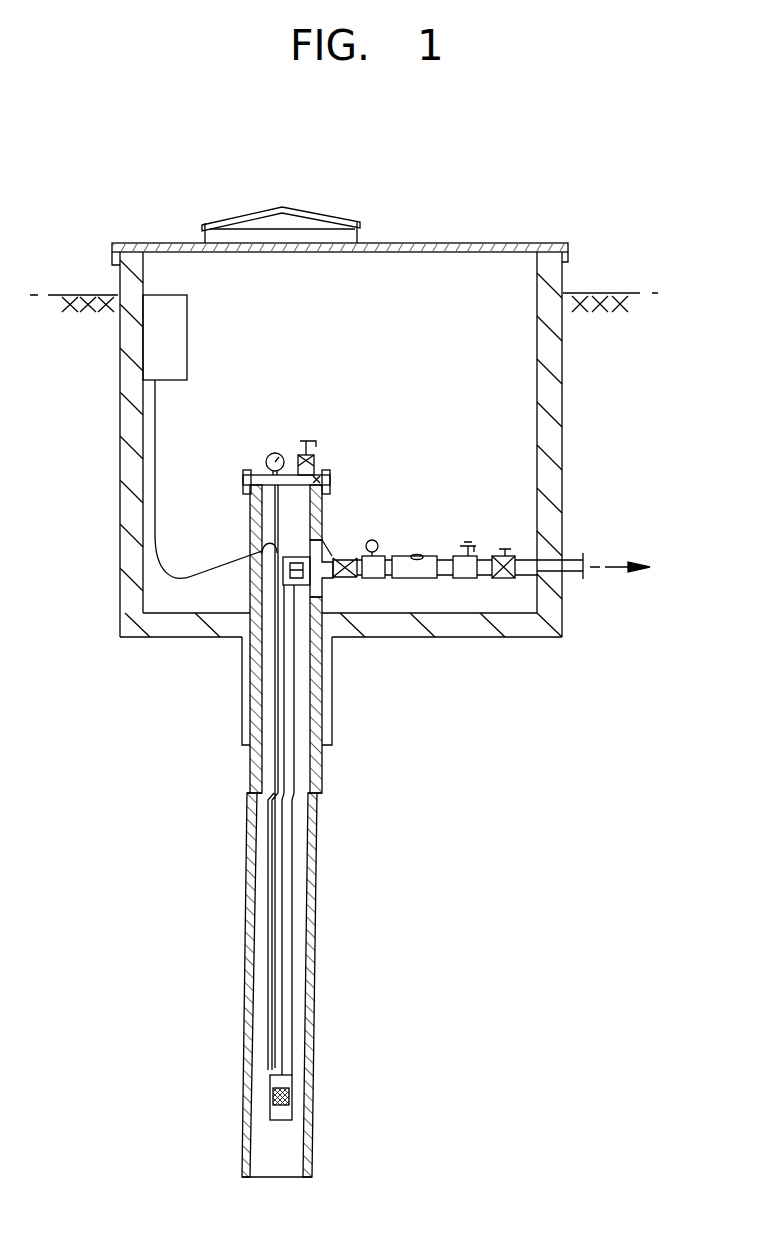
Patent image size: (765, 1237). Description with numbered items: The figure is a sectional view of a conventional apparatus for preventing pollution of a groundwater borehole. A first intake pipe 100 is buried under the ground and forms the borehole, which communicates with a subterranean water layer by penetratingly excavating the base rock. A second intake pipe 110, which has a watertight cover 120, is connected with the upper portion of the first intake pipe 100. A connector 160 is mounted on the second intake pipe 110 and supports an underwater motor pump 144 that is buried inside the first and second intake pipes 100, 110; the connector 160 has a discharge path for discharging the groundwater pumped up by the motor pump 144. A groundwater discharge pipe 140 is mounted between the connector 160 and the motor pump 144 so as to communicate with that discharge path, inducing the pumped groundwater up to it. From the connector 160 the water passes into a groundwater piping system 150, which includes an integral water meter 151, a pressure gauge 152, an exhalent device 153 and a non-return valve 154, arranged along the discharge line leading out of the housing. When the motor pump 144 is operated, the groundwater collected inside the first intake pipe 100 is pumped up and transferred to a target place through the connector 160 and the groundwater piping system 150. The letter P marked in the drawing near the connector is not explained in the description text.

The first intake pipe 100 is at (318, 918).
The second intake pipe 110 is at (255, 537).
The watertight cover 120 is at (260, 475).
The groundwater discharge pipe 140 is at (288, 800).
The underwater motor pump 144 is at (292, 1096).
The groundwater piping system 150 is at (528, 503).
The integral water meter 151 is at (373, 540).
The pressure gauge 152 is at (420, 556).
The exhalent device 153 is at (468, 536).
The non-return valve 154 is at (505, 548).
The connector 160 is at (347, 586).
The pitless adapter P is at (338, 524).